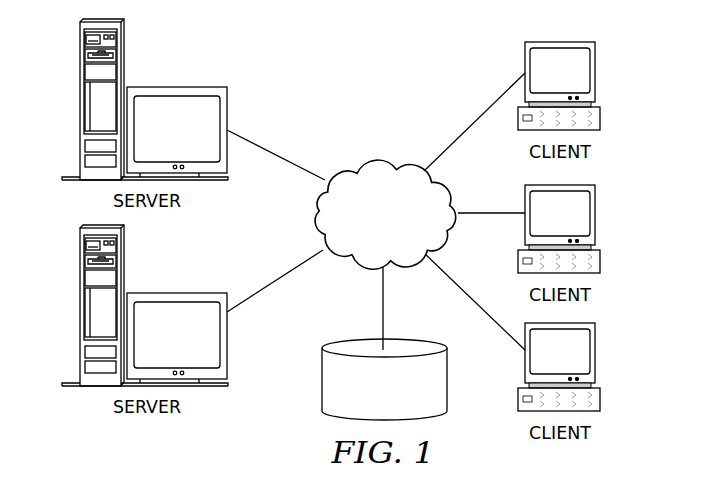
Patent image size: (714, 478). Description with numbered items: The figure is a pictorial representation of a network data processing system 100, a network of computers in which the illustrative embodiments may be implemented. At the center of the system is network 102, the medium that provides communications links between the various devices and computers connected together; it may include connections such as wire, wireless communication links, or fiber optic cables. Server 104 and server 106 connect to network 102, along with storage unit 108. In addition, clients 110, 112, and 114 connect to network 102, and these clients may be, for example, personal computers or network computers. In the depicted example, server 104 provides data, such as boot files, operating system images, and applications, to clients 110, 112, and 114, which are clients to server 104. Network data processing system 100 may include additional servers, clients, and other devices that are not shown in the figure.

The network data processing system 100 is at (434, 60).
The network 102 is at (357, 164).
The server 104 is at (80, 103).
The server 106 is at (80, 309).
The storage unit 108 is at (322, 388).
The client 110 is at (595, 72).
The client 112 is at (595, 213).
The client 114 is at (595, 352).